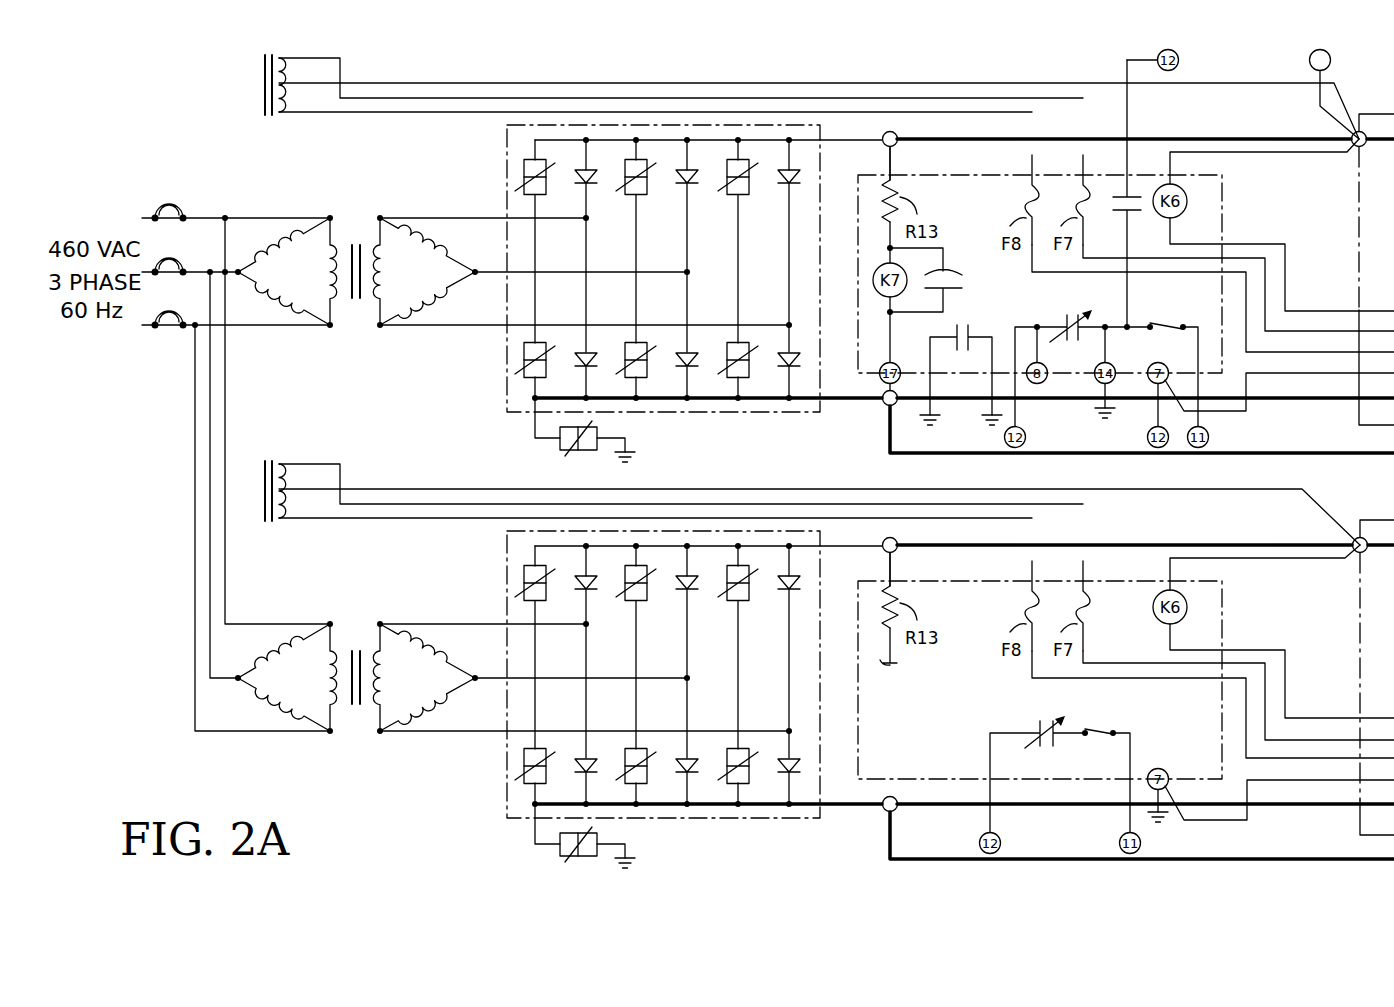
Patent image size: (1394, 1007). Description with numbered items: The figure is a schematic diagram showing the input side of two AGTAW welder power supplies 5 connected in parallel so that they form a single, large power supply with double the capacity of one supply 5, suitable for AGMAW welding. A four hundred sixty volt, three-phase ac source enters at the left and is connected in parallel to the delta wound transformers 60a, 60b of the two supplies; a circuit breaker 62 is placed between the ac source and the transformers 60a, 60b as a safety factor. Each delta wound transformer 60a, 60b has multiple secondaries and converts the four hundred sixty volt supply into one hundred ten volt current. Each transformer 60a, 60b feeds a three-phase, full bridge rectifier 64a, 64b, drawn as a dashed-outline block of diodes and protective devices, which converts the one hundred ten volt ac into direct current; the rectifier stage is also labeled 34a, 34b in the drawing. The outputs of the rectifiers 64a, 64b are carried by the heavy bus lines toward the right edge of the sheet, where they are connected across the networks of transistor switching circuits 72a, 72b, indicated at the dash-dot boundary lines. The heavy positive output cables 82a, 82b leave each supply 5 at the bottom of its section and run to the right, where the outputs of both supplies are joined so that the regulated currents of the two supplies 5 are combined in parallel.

The power supply 5 is at (230, 96).
The delta wound transformer 60a is at (312, 203).
The delta wound transformer 60b is at (312, 609).
The rectifier bridge 34a is at (472, 186).
The rectifier bridge 34b is at (472, 592).
The circuit breaker 62 is at (165, 342).
The three-phase full bridge rectifier 64a is at (705, 428).
The three-phase full bridge rectifier 64b is at (705, 834).
The transistor switching circuit 72a is at (1355, 243).
The transistor switching circuit 72b is at (1357, 655).
The positive output cable 82a is at (1262, 455).
The positive output cable 82b is at (1262, 857).